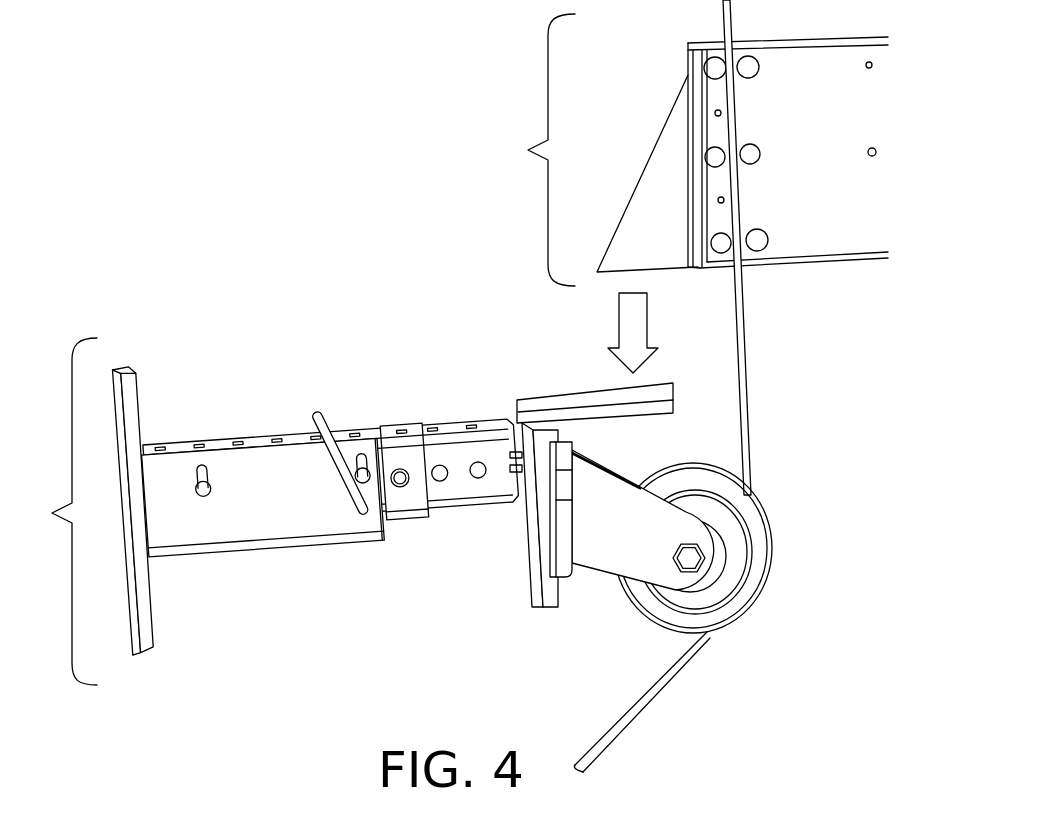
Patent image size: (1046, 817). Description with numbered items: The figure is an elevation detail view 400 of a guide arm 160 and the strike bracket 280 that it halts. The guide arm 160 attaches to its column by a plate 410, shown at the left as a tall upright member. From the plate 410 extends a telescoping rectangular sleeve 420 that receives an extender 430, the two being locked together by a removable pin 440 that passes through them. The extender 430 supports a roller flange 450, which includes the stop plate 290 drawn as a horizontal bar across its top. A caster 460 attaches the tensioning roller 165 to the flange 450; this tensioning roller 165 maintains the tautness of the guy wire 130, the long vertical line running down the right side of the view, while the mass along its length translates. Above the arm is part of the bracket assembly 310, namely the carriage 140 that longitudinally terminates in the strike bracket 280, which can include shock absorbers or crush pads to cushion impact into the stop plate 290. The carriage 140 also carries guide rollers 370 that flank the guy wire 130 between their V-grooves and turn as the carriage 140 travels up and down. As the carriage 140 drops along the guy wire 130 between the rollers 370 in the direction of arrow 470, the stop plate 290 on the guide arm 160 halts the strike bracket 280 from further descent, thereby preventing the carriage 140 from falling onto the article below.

The elevation detail view 400 is at (163, 79).
The carriage 140 is at (832, 153).
The guide rollers 370 is at (759, 251).
The strike bracket 280 is at (670, 256).
The bracket assembly 310 is at (528, 150).
The guy wire 130 is at (750, 416).
The direction arrow 470 is at (617, 312).
The guide arm 160 is at (51, 511).
The extender 430 is at (440, 422).
The telescoping rectangular sleeve 420 is at (285, 547).
The removable pin 440 is at (318, 408).
The plate 410 is at (155, 623).
The roller flange 450 is at (524, 580).
The stop plate 290 is at (543, 395).
The tensioning roller 165 is at (758, 600).
The caster 460 is at (603, 567).